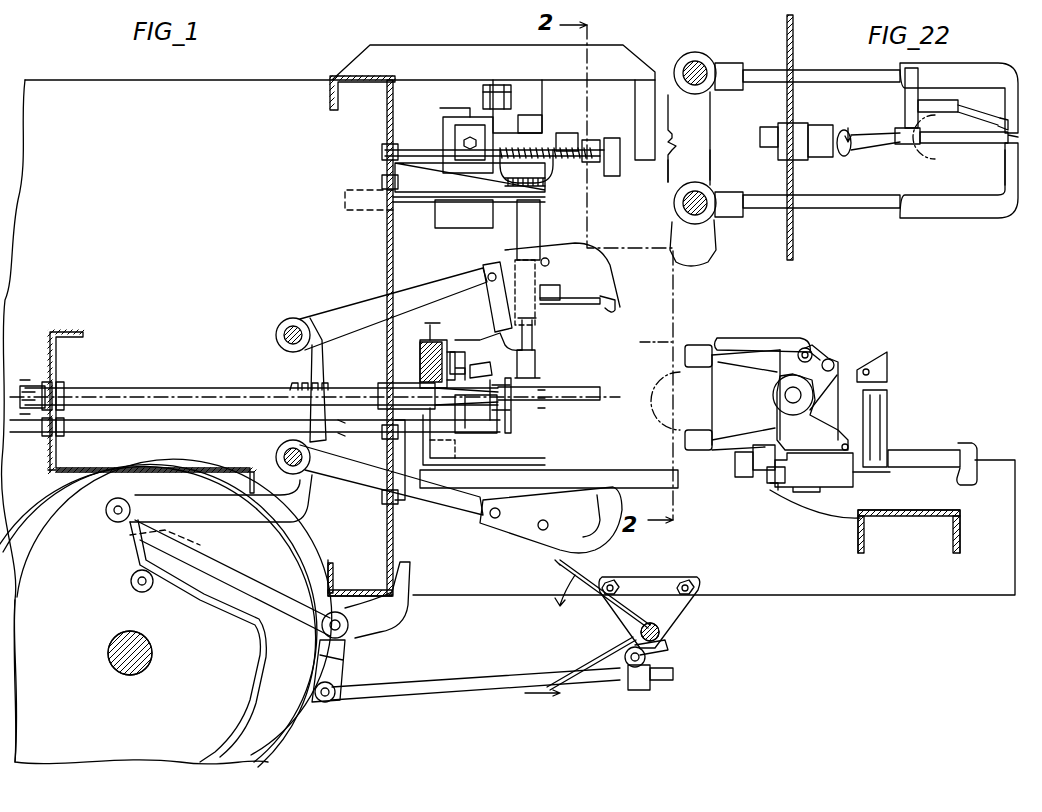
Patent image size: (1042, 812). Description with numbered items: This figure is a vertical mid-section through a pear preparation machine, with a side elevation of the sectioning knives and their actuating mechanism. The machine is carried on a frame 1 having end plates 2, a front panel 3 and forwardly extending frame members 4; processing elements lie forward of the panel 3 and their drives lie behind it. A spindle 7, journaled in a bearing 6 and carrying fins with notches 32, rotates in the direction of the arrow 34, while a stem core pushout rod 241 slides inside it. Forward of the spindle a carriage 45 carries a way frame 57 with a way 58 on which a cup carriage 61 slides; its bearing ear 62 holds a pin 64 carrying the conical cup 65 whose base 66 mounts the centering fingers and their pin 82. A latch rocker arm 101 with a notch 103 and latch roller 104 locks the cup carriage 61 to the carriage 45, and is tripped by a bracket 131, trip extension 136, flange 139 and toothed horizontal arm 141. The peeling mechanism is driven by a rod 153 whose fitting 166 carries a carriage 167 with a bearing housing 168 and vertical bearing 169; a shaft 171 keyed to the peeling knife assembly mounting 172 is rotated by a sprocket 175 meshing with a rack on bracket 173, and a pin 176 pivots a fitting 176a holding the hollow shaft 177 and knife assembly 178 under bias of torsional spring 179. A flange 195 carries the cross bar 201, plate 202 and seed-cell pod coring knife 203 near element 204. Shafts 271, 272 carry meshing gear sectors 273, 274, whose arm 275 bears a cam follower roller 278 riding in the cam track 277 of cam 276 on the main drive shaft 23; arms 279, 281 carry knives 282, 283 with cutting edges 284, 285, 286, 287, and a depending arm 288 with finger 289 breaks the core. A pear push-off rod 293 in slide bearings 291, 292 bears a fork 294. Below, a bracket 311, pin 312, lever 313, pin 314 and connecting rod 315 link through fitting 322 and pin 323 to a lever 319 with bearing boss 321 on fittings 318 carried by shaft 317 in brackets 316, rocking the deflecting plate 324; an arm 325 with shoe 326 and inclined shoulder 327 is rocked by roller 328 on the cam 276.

In FIG. 1, the frame 1 is at (307, 78).
In FIG. 1, the end plate 2 is at (167, 421).
In FIG. 1, the front panel 3 is at (387, 124).
In FIG. 22, the front panel 3 is at (787, 25).
In FIG. 1, the frame member 4 is at (880, 595).
In FIG. 1, the bearing 6 is at (412, 382).
In FIG. 1, the spindle 7 is at (178, 390).
In FIG. 1, the main drive shaft 23 is at (140, 672).
In FIG. 22, the notch 32 is at (915, 152).
In FIG. 22, the arrow 34 is at (848, 148).
In FIG. 1, the carriage 45 is at (866, 535).
In FIG. 1, the way frame 57 is at (826, 505).
In FIG. 1, the way 58 is at (916, 450).
In FIG. 1, the cup carriage 61 is at (878, 488).
In FIG. 1, the bearing ear 62 is at (815, 402).
In FIG. 1, the pin 64 is at (785, 393).
In FIG. 1, the conical cup 65 is at (748, 358).
In FIG. 1, the cup base 66 is at (770, 412).
In FIG. 1, the pin 82 is at (812, 352).
In FIG. 1, the latch rocker arm 101 is at (794, 468).
In FIG. 1, the notch 103 is at (772, 492).
In FIG. 1, the latch roller 104 is at (765, 480).
In FIG. 1, the bracket 131 is at (402, 500).
In FIG. 1, the trip extension 136 is at (497, 434).
In FIG. 1, the flange 139 is at (525, 470).
In FIG. 1, the horizontal arm 141 is at (549, 477).
In FIG. 1, the rod 153 is at (380, 212).
In FIG. 1, the fitting 166 is at (447, 133).
In FIG. 1, the carriage 167 is at (490, 93).
In FIG. 1, the bearing housing 168 is at (543, 93).
In FIG. 1, the vertical bearing 169 is at (543, 118).
In FIG. 1, the shaft 171 is at (540, 233).
In FIG. 1, the peeling knife assembly mounting 172 is at (548, 214).
In FIG. 1, the bracket 173 is at (491, 168).
In FIG. 1, the sprocket 175 is at (547, 196).
In FIG. 1, the pin 176 is at (585, 140).
In FIG. 1, the fitting 176a is at (553, 180).
In FIG. 1, the hollow shaft 177 is at (533, 333).
In FIG. 1, the knife assembly 178 is at (540, 372).
In FIG. 1, the torsional spring 179 is at (568, 133).
In FIG. 1, the flange 195 is at (438, 322).
In FIG. 1, the cross bar 201 is at (418, 355).
In FIG. 1, the plate 202 is at (447, 350).
In FIG. 1, the seed-cell pod coring knife 203 is at (492, 368).
In FIG. 1, the bracket 204 is at (465, 362).
In FIG. 1, the stem core pushout rod 241 is at (28, 388).
In FIG. 1, the shaft 271 is at (292, 318).
In FIG. 22, the shaft 271 is at (712, 62).
In FIG. 1, the shaft 272 is at (276, 458).
In FIG. 22, the shaft 272 is at (675, 210).
In FIG. 1, the gear sector 273 is at (316, 350).
In FIG. 22, the gear sector 273 is at (706, 124).
In FIG. 1, the gear sector 274 is at (318, 432).
In FIG. 22, the gear sector 274 is at (706, 176).
In FIG. 1, the arm 275 is at (228, 510).
In FIG. 22, the arm 275 is at (690, 268).
In FIG. 1, the cam 276 is at (78, 495).
In FIG. 1, the cam track 277 is at (166, 613).
In FIG. 1, the cam follower roller 278 is at (106, 514).
In FIG. 1, the arm 279 is at (367, 310).
In FIG. 22, the arm 279 is at (858, 70).
In FIG. 1, the arm 281 is at (375, 480).
In FIG. 22, the arm 281 is at (828, 215).
In FIG. 1, the knife 282 is at (590, 246).
In FIG. 22, the knife 282 is at (975, 65).
In FIG. 1, the knife 283 is at (605, 535).
In FIG. 22, the knife 283 is at (960, 215).
In FIG. 1, the cutting edge 284 is at (548, 286).
In FIG. 22, the cutting edge 284 is at (922, 100).
In FIG. 1, the cutting edge 285 is at (570, 308).
In FIG. 22, the cutting edge 285 is at (968, 110).
In FIG. 1, the cutting edge 286 is at (606, 305).
In FIG. 22, the cutting edge 286 is at (995, 112).
In FIG. 1, the cutting edge 287 is at (597, 502).
In FIG. 22, the cutting edge 287 is at (1003, 170).
In FIG. 1, the depending arm 288 is at (496, 264).
In FIG. 22, the depending arm 288 is at (905, 104).
In FIG. 1, the finger 289 is at (497, 334).
In FIG. 22, the finger 289 is at (918, 126).
In FIG. 1, the slide bearing 291 is at (60, 437).
In FIG. 1, the slide bearing 292 is at (382, 438).
In FIG. 1, the pear push-off rod 293 is at (102, 432).
In FIG. 1, the fork 294 is at (512, 418).
In FIG. 1, the bracket 311 is at (365, 630).
In FIG. 1, the pin 312 is at (333, 612).
In FIG. 1, the lever 313 is at (345, 655).
In FIG. 1, the pin 314 is at (325, 702).
In FIG. 1, the connecting rod 315 is at (478, 685).
In FIG. 1, the bracket 316 is at (682, 606).
In FIG. 1, the shaft 317 is at (640, 606).
In FIG. 1, the fitting 318 is at (668, 640).
In FIG. 1, the lever 319 is at (648, 656).
In FIG. 1, the bearing boss 321 is at (624, 682).
In FIG. 1, the fitting 322 is at (645, 690).
In FIG. 1, the pin 323 is at (674, 672).
In FIG. 1, the deflecting plate 324 is at (560, 564).
In FIG. 1, the arm 325 is at (255, 560).
In FIG. 1, the shoe 326 is at (165, 540).
In FIG. 1, the inclined shoulder 327 is at (140, 548).
In FIG. 1, the roller 328 is at (130, 577).